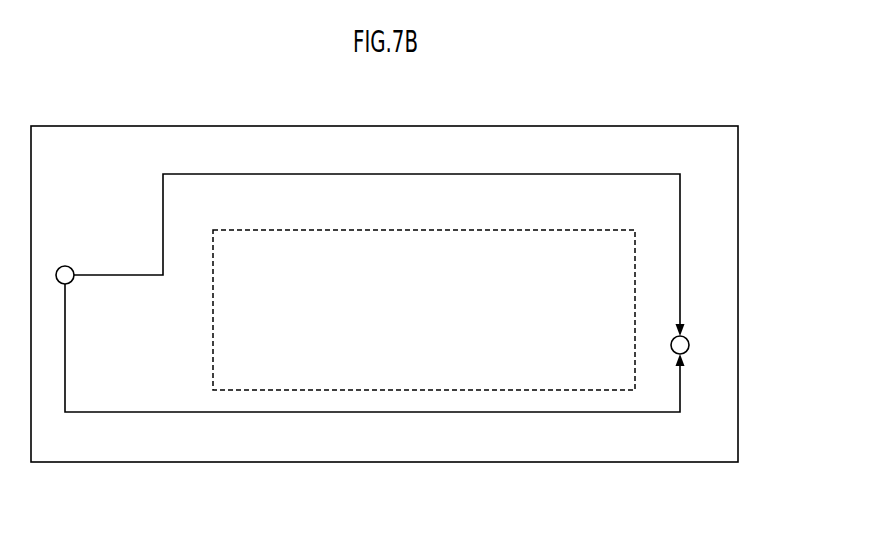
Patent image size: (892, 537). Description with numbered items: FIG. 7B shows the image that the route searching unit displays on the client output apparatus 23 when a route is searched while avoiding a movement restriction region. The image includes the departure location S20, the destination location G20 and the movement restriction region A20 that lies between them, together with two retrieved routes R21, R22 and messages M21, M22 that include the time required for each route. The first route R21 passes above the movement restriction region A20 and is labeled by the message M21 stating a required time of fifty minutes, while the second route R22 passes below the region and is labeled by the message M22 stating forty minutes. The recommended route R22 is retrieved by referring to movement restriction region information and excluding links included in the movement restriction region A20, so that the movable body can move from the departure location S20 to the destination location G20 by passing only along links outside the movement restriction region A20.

The client output apparatus 23 is at (667, 112).
The departure location S20 is at (70, 267).
The destination location G20 is at (688, 338).
The movement restriction region A20 is at (575, 230).
The route R21 is at (520, 175).
The recommended route R22 is at (496, 412).
The message M21 is at (398, 140).
The message M22 is at (382, 440).